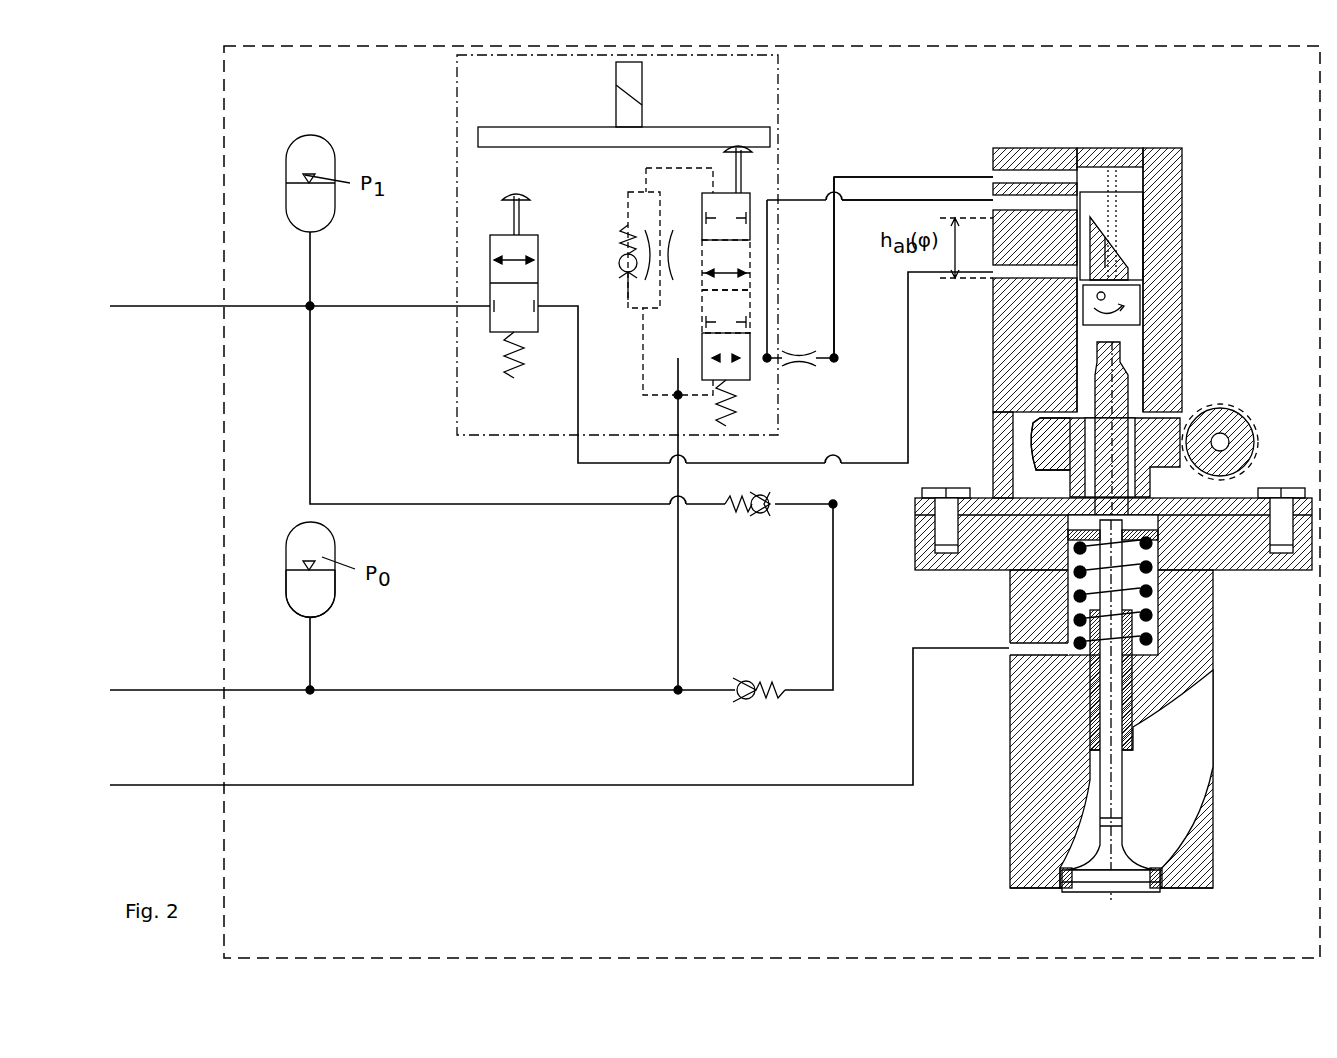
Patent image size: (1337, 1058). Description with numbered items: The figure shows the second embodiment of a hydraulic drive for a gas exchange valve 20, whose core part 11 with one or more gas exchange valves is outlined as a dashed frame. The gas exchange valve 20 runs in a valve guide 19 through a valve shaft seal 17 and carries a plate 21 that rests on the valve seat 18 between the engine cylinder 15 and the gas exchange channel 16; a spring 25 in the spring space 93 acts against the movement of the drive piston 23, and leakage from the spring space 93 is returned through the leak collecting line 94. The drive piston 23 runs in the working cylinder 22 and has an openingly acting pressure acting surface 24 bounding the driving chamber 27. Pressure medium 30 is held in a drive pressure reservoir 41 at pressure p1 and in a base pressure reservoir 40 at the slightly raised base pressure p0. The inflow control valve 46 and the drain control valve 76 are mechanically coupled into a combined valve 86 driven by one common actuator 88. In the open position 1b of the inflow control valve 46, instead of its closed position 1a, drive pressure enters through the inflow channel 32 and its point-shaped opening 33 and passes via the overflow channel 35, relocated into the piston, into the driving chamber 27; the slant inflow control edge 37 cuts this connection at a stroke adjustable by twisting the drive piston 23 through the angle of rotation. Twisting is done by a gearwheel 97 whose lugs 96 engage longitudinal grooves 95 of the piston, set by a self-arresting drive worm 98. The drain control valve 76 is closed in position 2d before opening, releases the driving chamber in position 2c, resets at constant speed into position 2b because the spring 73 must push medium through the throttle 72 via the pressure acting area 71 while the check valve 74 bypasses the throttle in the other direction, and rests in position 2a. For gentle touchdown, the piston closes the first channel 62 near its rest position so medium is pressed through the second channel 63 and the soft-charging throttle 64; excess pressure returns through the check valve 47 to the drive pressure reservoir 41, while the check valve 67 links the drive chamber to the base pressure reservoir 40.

The core part of the drive 11 is at (772, 502).
The combined valve 86 is at (617, 245).
The common actuator 88 is at (624, 104).
The pressure acting area of drain control valve 71 is at (708, 193).
The closed position of drain control valve 2d is at (726, 216).
The release position of drain control valve 2c is at (726, 265).
The reset position of drain control valve 2b is at (726, 312).
The rest position of drain control valve 2a is at (726, 356).
The drain control valve 76 is at (678, 351).
The spring for returning drain control valve 73 is at (743, 403).
The check valve of drain control valve 74 is at (623, 250).
The throttle of the drain control valve 72 is at (671, 255).
The inflow control valve 46 is at (499, 286).
The open position of inflow control valve 1b is at (514, 263).
The closed position of inflow control valve 1a is at (514, 315).
The soft-charging throttle 64 is at (799, 373).
The second inlet and outlet channel 63 is at (945, 178).
The first inlet and outlet channel 62 is at (860, 205).
The leak collecting line 94 is at (408, 790).
The refeed-back check valve of the working chamber 47 is at (747, 518).
The check valve between drive chamber and base pressure reservoir 67 is at (759, 706).
The drive pressure reservoir 41 is at (318, 152).
The base pressure reservoir 40 is at (318, 548).
The pressure medium 30 is at (318, 598).
The inflow channel 32 is at (1000, 276).
The control edge of the inflow channel in the cylinder wall 33 is at (1040, 300).
The openingly acting pressure acting surface of the drive piston 24 is at (1128, 190).
The driving chamber 27 is at (1095, 176).
The working cylinder 22 is at (1123, 170).
The slant inflow control edge of the drive piston 37 is at (1165, 210).
The overflow space in the drive piston 35 is at (1125, 262).
The drive piston 23 is at (1128, 305).
The lugs 96 is at (1090, 442).
The gearwheel 97 is at (1050, 455).
The longitudinal grooves 95 is at (1098, 392).
The drive worm 98 is at (1238, 425).
The gas exchange channel 16 is at (1113, 693).
The spring space 93 is at (1150, 625).
The valve shaft seal 17 is at (1140, 607).
The engine cylinder 15 is at (1111, 906).
The valve guide 19 is at (1092, 712).
The gas exchange valve 20 is at (1115, 782).
The plate of the gas exchange valve 21 is at (1090, 896).
The valve seat 18 is at (1066, 882).
The spring 25 is at (1085, 592).